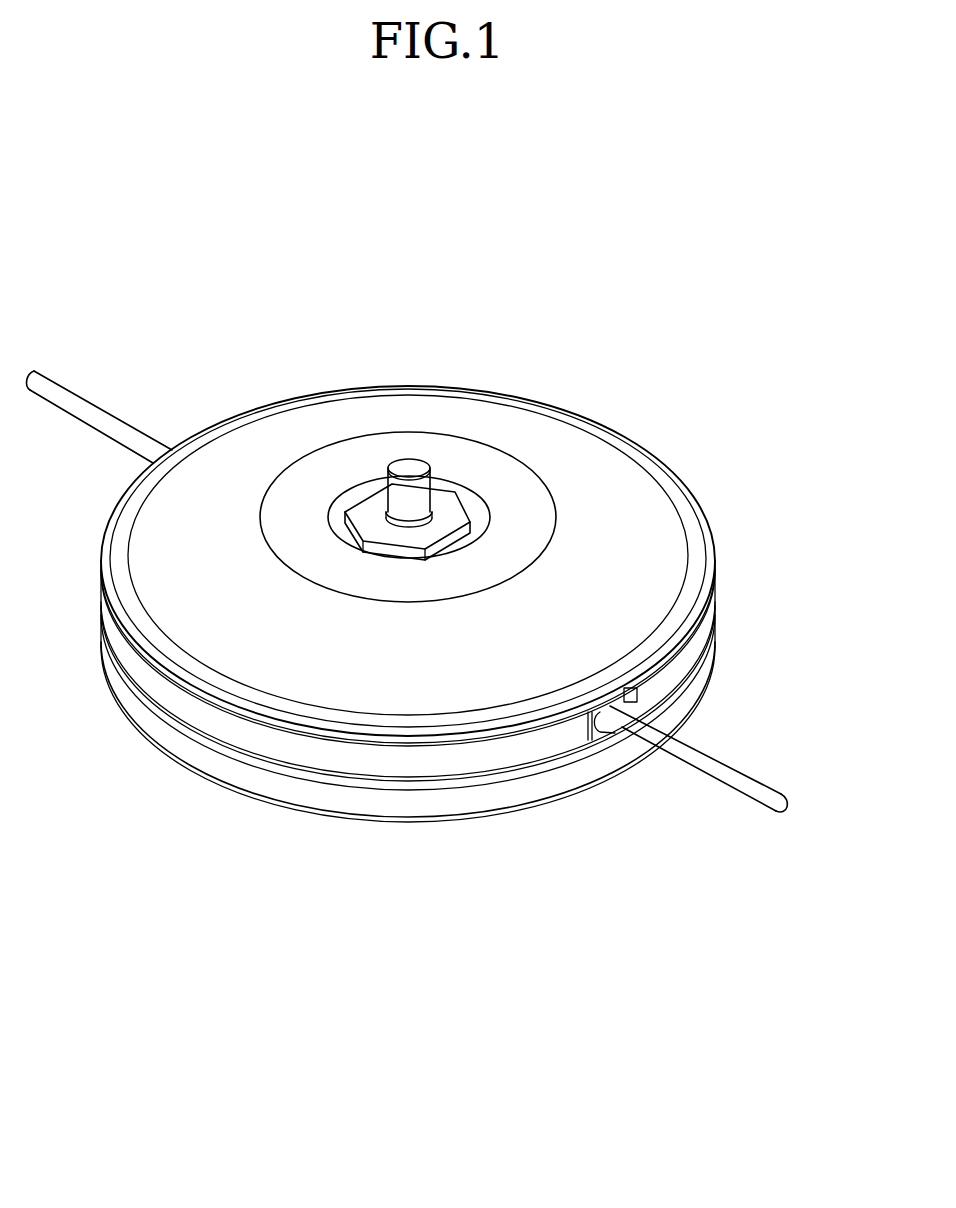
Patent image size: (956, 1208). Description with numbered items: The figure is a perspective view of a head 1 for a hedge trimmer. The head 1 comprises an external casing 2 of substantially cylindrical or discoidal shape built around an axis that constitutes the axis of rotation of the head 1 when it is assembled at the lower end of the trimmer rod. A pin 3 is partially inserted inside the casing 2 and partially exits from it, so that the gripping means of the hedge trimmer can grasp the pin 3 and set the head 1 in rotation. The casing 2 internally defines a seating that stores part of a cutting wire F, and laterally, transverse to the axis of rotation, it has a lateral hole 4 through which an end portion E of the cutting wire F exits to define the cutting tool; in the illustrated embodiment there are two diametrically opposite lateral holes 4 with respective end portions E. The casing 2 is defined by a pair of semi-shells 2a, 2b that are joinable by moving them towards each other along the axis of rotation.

The head 1 is at (197, 897).
The external casing 2 is at (690, 482).
The semi-shell 2a is at (563, 453).
The semi-shell 2b is at (457, 804).
The pin 3 is at (414, 494).
The lateral hole 4 is at (628, 728).
The end portion E is at (78, 395).
The cutting wire F is at (145, 447).